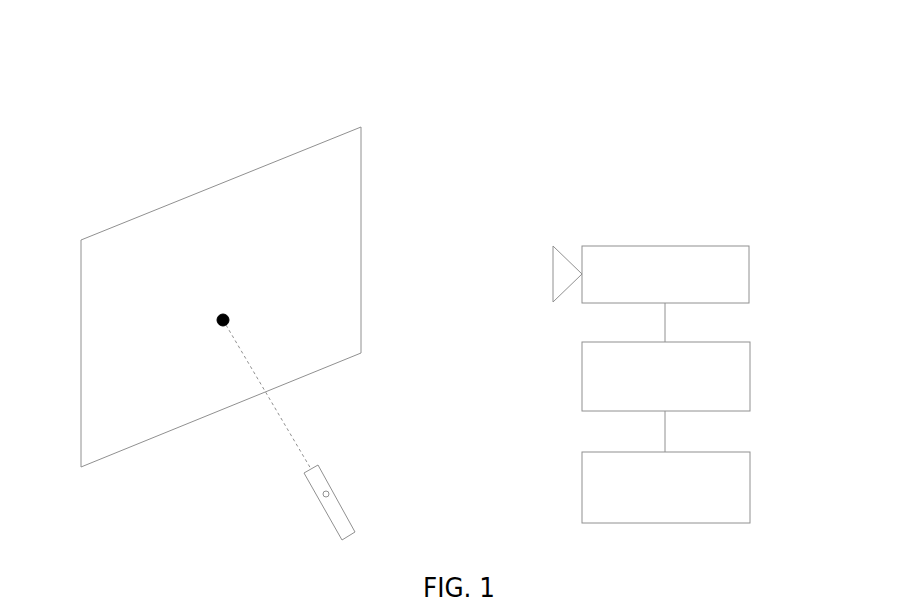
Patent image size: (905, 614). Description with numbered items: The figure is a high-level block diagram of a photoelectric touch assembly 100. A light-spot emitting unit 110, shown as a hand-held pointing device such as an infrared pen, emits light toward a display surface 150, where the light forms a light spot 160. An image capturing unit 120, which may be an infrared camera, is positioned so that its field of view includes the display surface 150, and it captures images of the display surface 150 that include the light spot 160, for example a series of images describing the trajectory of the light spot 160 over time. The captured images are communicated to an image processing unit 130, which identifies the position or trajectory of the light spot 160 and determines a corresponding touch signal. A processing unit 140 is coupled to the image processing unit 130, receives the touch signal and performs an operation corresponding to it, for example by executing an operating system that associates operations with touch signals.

The photoelectric touch assembly 100 is at (402, 97).
The light-spot emitting unit 110 is at (322, 507).
The image capturing unit 120 is at (665, 245).
The image processing unit 130 is at (650, 406).
The processing unit 140 is at (650, 507).
The display surface 150 is at (222, 182).
The light spot 160 is at (232, 319).